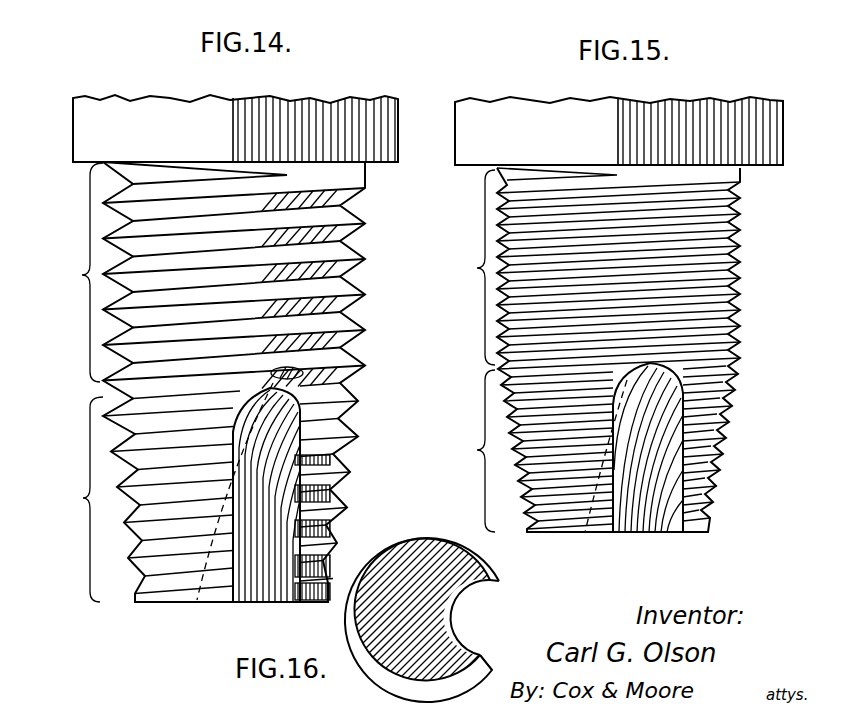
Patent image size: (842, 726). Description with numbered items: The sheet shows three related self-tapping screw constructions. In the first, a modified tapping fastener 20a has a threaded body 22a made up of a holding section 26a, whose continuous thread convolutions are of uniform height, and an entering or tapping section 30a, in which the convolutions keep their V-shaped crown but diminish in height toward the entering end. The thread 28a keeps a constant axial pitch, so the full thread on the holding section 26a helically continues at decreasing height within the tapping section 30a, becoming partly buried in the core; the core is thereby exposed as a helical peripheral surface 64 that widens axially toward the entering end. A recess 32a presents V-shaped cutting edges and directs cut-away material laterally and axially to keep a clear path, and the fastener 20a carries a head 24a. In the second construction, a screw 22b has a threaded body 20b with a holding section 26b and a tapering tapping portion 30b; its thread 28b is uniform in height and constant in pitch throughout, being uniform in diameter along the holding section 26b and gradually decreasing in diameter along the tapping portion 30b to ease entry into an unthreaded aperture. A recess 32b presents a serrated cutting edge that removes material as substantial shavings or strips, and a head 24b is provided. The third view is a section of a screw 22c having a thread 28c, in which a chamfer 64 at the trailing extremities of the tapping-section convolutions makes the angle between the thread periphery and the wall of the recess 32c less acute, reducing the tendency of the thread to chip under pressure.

In FIG. 14, the tapping device or fastener 20a is at (355, 318).
In FIG. 14, the head 24a is at (373, 112).
In FIG. 14, the thread 28a is at (345, 222).
In FIG. 14, the threaded body 22a is at (352, 353).
In FIG. 14, the holding section 26a is at (75, 272).
In FIG. 14, the entering or tapping section 30a is at (200, 492).
In FIG. 14, the recess 32a is at (260, 590).
In FIG. 14, the peripheral surface (exposed core) / chamfer 64 is at (338, 482).
In FIG. 16, the peripheral surface (exposed core) / chamfer 64 is at (484, 660).
In FIG. 15, the threaded body 20b is at (742, 277).
In FIG. 15, the head 24b is at (735, 122).
In FIG. 15, the thread 28b is at (742, 218).
In FIG. 15, the screw 22b is at (742, 317).
In FIG. 15, the holding section 26b is at (468, 267).
In FIG. 15, the tapping portion 30b is at (468, 451).
In FIG. 15, the recess 32b is at (652, 522).
In FIG. 16, the screw structure 22c is at (496, 570).
In FIG. 16, the thread 28c is at (347, 631).
In FIG. 16, the recess 32c is at (453, 612).